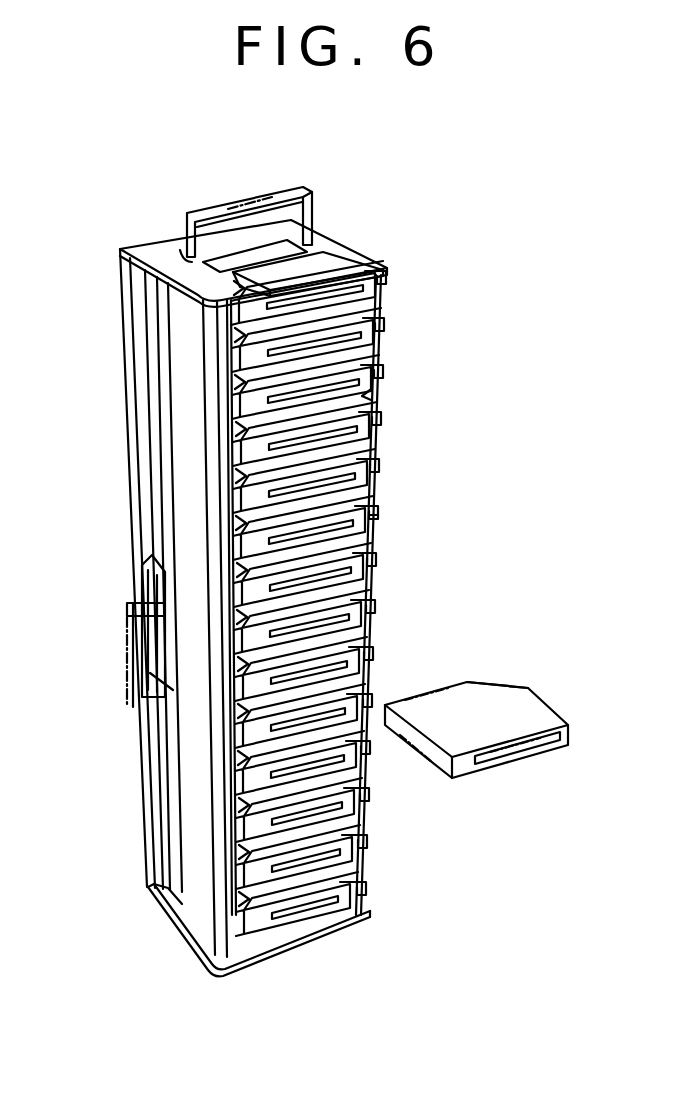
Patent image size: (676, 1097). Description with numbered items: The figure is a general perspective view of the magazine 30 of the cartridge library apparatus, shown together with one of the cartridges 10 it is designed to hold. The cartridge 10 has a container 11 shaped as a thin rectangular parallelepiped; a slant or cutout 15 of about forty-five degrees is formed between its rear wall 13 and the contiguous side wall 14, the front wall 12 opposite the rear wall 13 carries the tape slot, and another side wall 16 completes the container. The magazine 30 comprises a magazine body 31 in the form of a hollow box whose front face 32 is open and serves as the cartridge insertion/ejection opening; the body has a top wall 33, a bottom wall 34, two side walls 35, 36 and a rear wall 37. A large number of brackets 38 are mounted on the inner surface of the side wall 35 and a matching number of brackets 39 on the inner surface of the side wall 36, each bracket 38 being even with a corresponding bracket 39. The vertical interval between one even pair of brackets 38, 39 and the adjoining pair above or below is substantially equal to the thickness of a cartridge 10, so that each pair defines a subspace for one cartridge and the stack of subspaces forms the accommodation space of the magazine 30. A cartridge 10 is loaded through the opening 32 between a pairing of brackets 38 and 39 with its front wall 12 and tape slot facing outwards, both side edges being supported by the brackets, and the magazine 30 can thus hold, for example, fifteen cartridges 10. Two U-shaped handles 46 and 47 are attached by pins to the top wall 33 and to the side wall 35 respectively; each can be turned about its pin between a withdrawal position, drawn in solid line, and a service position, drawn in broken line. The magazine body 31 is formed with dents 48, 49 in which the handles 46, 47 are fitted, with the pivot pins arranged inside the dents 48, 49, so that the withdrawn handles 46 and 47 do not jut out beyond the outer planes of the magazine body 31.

The cartridge 10 is at (352, 312).
The container 11 is at (510, 700).
The front wall 12 is at (462, 770).
The rear wall 13 is at (436, 688).
The side wall 14 is at (545, 702).
The slant or cutout 15 is at (492, 683).
The side wall 16 is at (425, 755).
The magazine 30 is at (120, 328).
The magazine body 31 is at (122, 486).
The front face 32 is at (318, 928).
The top wall 33 is at (337, 250).
The bottom wall 34 is at (282, 960).
The side wall 35 is at (190, 795).
The side wall 36 is at (378, 545).
The rear wall 37 is at (150, 243).
The bracket 38 is at (250, 395).
The bracket 39 is at (362, 396).
The handle 46 is at (288, 190).
The handle 47 is at (130, 605).
The dent 48 is at (186, 253).
The dent 49 is at (143, 563).